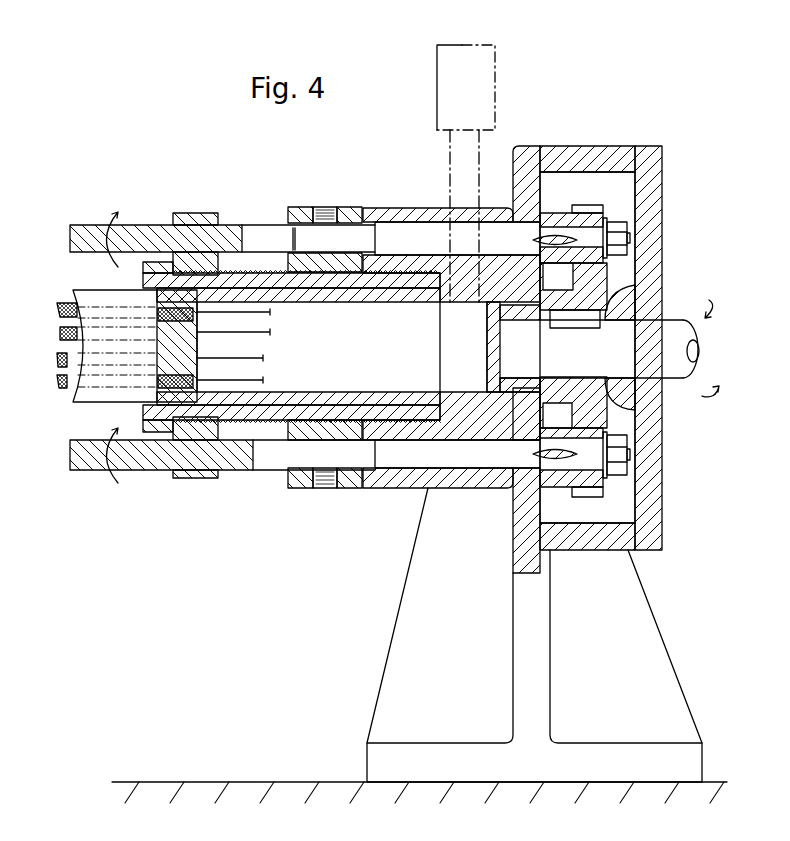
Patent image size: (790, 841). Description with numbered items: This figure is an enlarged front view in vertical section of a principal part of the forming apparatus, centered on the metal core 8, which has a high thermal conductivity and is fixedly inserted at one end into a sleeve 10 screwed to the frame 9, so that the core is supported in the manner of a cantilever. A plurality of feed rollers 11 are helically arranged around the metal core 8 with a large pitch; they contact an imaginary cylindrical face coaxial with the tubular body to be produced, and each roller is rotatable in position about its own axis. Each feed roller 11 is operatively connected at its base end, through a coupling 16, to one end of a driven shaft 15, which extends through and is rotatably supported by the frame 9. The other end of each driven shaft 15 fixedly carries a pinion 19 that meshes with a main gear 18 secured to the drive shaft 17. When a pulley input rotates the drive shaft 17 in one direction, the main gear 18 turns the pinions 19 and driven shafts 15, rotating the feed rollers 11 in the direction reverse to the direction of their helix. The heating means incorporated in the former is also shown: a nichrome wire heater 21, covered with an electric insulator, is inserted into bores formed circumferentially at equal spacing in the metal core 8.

The metal core 8 is at (137, 402).
The frame 9 is at (403, 607).
The sleeve 10 is at (267, 467).
The feed rollers 11 is at (252, 225).
The driven shaft 15 is at (410, 233).
The coupling 16 is at (305, 210).
The drive shaft 17 is at (678, 322).
The main gear 18 is at (610, 387).
The pinion 19 is at (580, 212).
The nichrome wire heater 21 is at (165, 310).